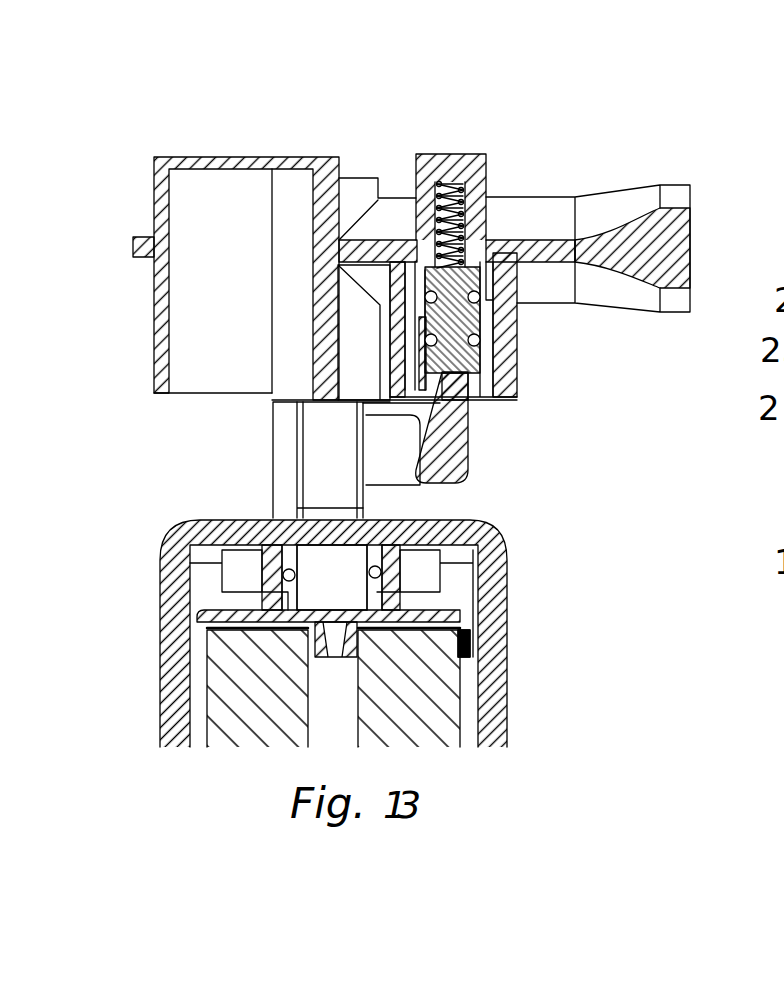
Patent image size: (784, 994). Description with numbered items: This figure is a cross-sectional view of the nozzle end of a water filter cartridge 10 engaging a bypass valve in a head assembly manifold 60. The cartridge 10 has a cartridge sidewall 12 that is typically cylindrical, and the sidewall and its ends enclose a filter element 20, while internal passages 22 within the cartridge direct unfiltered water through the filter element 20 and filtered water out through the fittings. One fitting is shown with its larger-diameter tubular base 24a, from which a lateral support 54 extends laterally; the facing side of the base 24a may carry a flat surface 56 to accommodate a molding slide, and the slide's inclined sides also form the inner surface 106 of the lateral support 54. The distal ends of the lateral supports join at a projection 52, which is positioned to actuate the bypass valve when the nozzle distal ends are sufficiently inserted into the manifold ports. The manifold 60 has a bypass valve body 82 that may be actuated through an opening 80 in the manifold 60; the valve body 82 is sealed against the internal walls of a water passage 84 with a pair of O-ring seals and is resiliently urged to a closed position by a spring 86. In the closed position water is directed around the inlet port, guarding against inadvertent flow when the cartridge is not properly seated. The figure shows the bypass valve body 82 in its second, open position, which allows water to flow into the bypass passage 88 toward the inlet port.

The water filter cartridge 10 is at (678, 593).
The cartridge sidewall 12 is at (497, 655).
The filter element 20 is at (445, 700).
The internal passages 22 is at (350, 597).
The tubular base 24a is at (273, 453).
The projection 52 is at (457, 405).
The lateral support 54 is at (392, 473).
The flat surface 56 is at (320, 483).
The manifold 60 is at (673, 168).
The opening 80 is at (475, 375).
The bypass valve body 82 is at (457, 297).
The water passage 84 is at (428, 262).
The spring 86 is at (467, 200).
The bypass passage 88 is at (493, 297).
The inner surface 106 is at (410, 465).